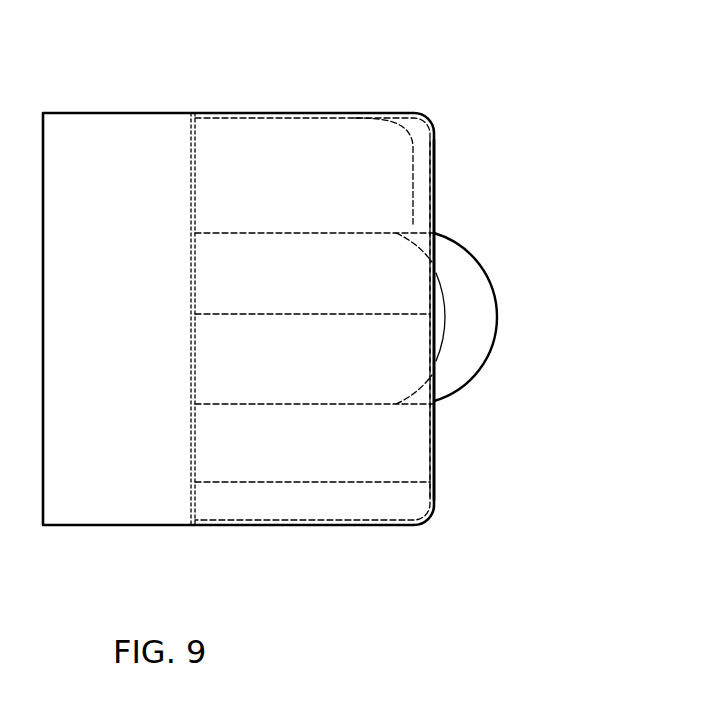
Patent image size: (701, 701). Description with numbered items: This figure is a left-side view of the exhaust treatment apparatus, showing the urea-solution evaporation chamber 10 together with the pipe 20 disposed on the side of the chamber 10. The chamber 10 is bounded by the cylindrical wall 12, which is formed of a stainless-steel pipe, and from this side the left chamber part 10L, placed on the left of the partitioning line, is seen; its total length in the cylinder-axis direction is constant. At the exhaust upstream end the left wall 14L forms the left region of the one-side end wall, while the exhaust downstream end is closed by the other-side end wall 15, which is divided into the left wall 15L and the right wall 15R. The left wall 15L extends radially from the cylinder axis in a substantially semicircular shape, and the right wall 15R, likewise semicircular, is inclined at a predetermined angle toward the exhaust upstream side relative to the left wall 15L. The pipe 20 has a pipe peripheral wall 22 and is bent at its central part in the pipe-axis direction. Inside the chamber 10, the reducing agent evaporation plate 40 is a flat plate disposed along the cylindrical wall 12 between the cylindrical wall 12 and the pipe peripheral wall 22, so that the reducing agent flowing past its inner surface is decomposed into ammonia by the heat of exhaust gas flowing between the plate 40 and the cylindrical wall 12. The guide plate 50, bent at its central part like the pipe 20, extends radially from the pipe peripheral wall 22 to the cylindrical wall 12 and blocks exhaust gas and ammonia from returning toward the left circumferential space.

The urea-solution evaporation chamber 10 is at (317, 300).
The left chamber part 10L is at (317, 316).
The cylindrical wall 12 is at (282, 112).
The left wall 14L is at (197, 160).
The guide plate 50 is at (347, 133).
The other-side end wall 15 is at (497, 320).
The left wall 15L is at (435, 193).
The right wall 15R is at (433, 223).
The pipe 20 is at (493, 318).
The pipe peripheral wall 22 is at (483, 313).
The reducing agent evaporation plate 40 is at (260, 483).